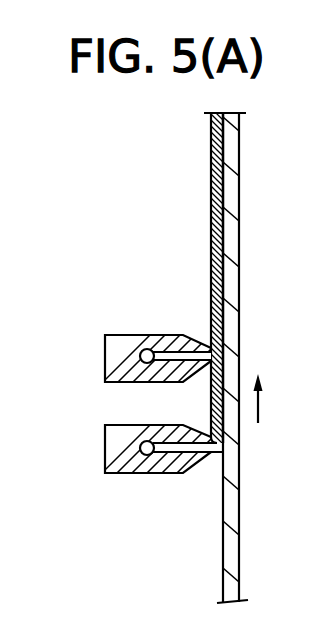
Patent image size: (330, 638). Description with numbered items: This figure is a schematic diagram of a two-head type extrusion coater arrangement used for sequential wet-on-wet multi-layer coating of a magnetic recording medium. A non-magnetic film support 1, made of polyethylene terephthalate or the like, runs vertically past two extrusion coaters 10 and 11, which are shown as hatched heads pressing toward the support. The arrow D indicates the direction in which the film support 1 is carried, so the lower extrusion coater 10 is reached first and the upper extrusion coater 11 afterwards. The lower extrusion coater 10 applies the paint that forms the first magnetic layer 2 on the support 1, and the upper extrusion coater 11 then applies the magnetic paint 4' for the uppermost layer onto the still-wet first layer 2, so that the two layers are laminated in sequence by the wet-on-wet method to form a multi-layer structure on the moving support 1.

The non-magnetic support 1 is at (230, 551).
The first magnetic layer 2 is at (221, 295).
The magnetic paint 4' is at (185, 276).
The extrusion coater 10 is at (108, 465).
The extrusion coater 11 is at (108, 364).
The arrow indicating carrying direction D is at (258, 413).